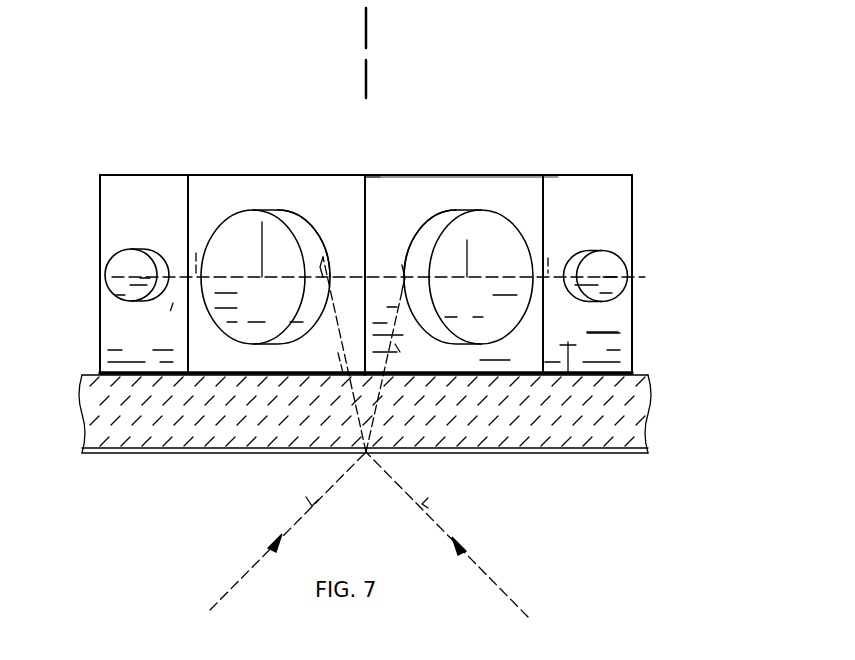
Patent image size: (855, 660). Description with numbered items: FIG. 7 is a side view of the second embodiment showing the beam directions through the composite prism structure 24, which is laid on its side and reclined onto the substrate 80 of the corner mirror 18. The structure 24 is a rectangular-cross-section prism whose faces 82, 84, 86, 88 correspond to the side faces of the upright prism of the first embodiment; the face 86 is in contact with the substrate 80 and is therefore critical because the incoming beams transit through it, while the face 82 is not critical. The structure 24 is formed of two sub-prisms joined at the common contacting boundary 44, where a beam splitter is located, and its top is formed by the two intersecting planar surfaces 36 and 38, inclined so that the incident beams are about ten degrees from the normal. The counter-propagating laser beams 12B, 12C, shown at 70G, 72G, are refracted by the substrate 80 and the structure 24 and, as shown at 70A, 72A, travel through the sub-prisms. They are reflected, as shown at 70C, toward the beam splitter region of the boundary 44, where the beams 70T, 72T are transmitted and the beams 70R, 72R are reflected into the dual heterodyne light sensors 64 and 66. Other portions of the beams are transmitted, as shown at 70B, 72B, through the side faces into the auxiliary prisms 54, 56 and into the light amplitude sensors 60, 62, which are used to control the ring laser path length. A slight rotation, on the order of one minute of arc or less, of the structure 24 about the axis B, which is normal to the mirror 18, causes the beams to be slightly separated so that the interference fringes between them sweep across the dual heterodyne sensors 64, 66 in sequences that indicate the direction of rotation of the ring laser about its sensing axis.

The axis B is at (366, 32).
The composite prism structure 24 is at (662, 218).
The corner mirror 18 is at (563, 448).
The substrate 80 is at (120, 430).
The counter-propagating laser beam 12B is at (308, 503).
The counter-propagating laser beam 12C is at (440, 497).
The inclined planar surface 36 is at (343, 183).
The inclined planar surface 38 is at (508, 198).
The interface surface 44 is at (367, 198).
The auxiliary prism 54 is at (123, 226).
The auxiliary prism 56 is at (615, 318).
The light amplitude sensor 60 is at (117, 275).
The light amplitude sensor 62 is at (620, 276).
The dual heterodyne light sensor 64 is at (275, 305).
The dual heterodyne light sensor 66 is at (488, 305).
The face 82 is at (433, 173).
The face 84 is at (548, 200).
The face 86 is at (589, 326).
The face 88 is at (187, 202).
The reflected beam 70C is at (200, 233).
The refracted beam 70A is at (323, 257).
The transmitted beam 70B is at (178, 275).
The refracted beam 70G is at (338, 353).
The reflected beam 70R is at (304, 243).
The transmitted beam 70T is at (467, 222).
The refracted beam 72A is at (396, 250).
The transmitted beam 72B is at (555, 250).
The refracted beam 72G is at (395, 344).
The reflected beam 72R is at (430, 243).
The transmitted beam 72T is at (263, 203).